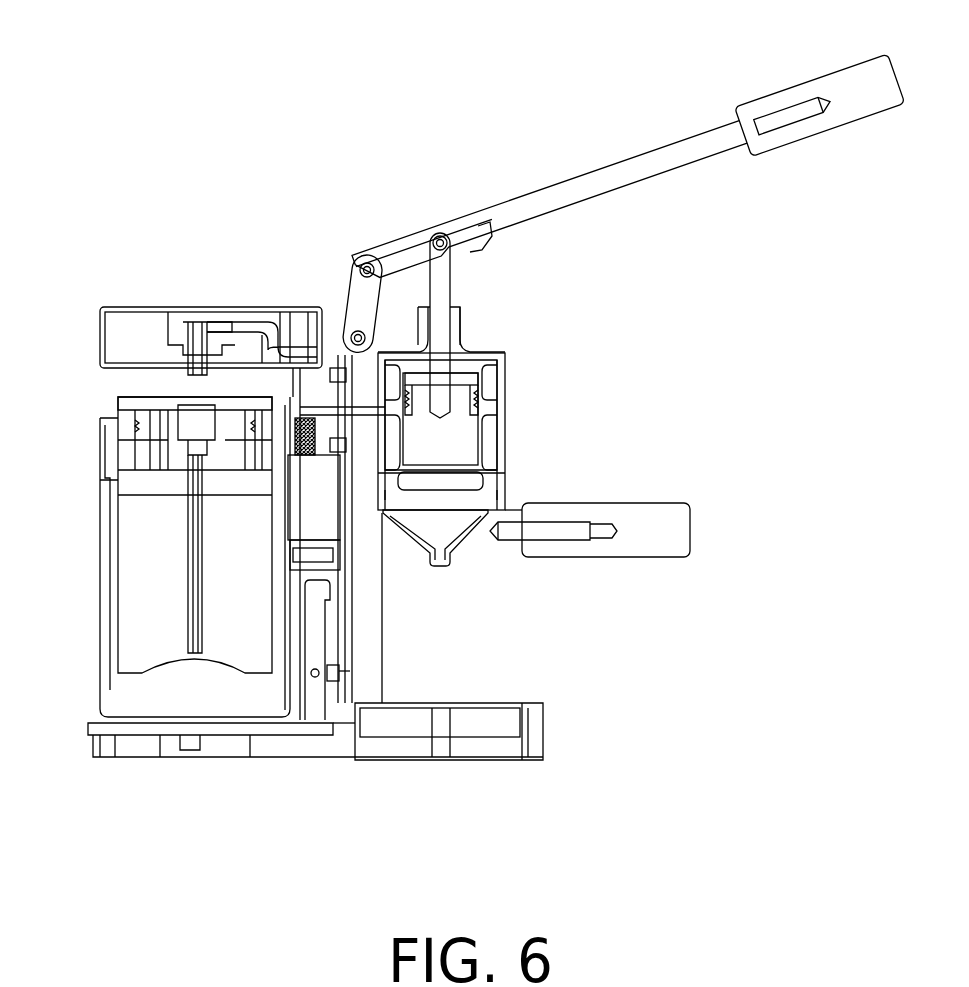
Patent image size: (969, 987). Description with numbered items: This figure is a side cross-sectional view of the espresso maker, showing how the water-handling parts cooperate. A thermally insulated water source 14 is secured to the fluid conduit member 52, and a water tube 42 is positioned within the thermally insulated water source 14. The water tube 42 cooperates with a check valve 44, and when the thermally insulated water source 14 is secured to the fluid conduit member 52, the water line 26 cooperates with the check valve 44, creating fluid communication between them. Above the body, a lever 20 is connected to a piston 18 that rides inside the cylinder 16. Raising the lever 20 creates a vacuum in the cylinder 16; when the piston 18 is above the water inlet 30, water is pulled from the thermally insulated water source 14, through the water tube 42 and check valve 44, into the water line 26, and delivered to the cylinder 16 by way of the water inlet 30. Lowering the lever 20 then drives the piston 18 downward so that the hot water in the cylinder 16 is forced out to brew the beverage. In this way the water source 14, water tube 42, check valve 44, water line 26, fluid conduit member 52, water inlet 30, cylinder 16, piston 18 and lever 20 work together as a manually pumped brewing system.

The lever 20 is at (810, 78).
The fluid conduit member 52 is at (128, 322).
The water line 26 is at (245, 318).
The check valve 44 is at (197, 415).
The thermally insulated water source 14 is at (100, 605).
The water tube 42 is at (187, 623).
The piston 18 is at (458, 385).
The cylinder 16 is at (440, 447).
The water inlet 30 is at (385, 418).